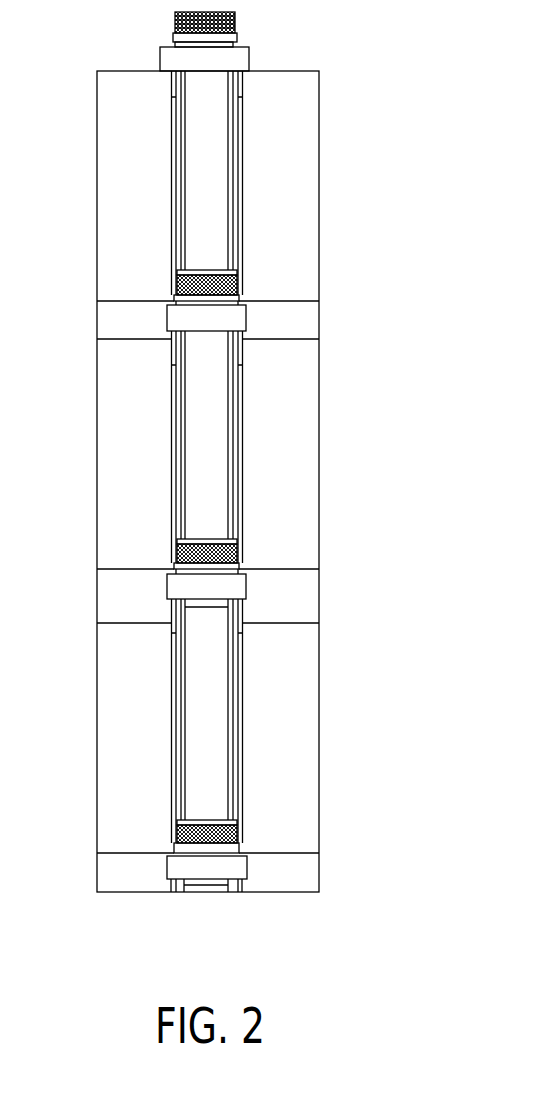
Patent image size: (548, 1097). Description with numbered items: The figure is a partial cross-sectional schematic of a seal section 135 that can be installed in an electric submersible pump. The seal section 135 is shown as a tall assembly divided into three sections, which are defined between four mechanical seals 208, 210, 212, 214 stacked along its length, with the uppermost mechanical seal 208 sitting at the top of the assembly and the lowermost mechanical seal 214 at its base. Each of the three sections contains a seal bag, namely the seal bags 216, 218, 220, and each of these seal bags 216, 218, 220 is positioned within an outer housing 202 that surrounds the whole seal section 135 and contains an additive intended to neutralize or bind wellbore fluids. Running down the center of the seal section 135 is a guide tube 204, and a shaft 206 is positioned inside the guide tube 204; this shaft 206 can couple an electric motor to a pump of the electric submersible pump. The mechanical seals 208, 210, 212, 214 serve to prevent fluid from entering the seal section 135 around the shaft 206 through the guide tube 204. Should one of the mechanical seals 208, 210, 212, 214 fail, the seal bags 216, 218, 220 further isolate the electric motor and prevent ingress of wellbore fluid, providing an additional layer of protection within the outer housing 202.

The seal section 135 is at (527, 394).
The outer housing 202 is at (317, 365).
The guide tube 204 is at (243, 135).
The shaft 206 is at (208, 247).
The mechanical seal 208 is at (232, 57).
The mechanical seal 210 is at (220, 317).
The mechanical seal 212 is at (212, 592).
The mechanical seal 214 is at (212, 868).
The seal bag 216 is at (107, 188).
The seal bag 218 is at (107, 477).
The seal bag 220 is at (107, 748).